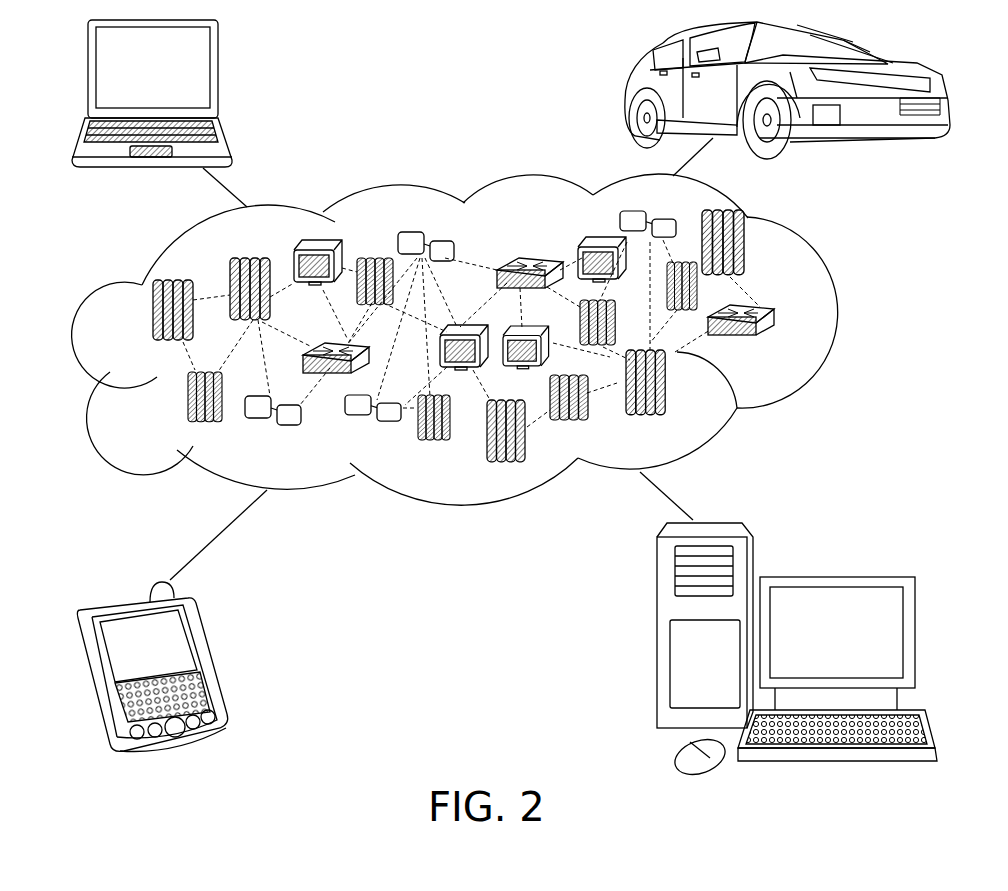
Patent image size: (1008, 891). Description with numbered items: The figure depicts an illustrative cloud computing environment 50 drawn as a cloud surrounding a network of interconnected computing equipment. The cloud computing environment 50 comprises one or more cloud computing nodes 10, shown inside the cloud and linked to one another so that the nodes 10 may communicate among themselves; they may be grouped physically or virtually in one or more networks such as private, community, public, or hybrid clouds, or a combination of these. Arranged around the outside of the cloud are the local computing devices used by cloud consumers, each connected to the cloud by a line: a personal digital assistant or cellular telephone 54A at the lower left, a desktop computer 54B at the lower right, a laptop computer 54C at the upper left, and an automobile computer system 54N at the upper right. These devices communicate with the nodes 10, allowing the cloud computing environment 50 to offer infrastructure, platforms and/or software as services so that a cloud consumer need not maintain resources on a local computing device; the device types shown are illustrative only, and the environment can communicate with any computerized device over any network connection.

The cloud computing node 10 is at (785, 347).
The cloud computing environment 50 is at (833, 318).
The personal digital assistant (PDA) or cellular telephone 54A is at (205, 655).
The desktop computer 54B is at (828, 575).
The laptop computer 54C is at (219, 73).
The automobile computer system 54N is at (630, 92).